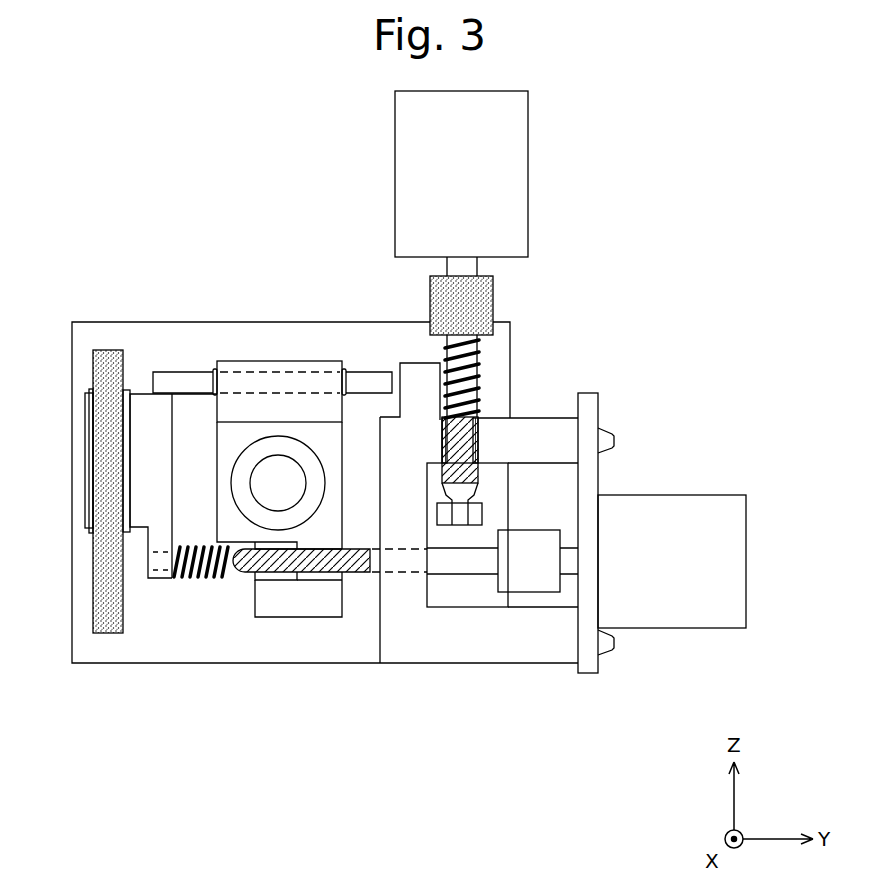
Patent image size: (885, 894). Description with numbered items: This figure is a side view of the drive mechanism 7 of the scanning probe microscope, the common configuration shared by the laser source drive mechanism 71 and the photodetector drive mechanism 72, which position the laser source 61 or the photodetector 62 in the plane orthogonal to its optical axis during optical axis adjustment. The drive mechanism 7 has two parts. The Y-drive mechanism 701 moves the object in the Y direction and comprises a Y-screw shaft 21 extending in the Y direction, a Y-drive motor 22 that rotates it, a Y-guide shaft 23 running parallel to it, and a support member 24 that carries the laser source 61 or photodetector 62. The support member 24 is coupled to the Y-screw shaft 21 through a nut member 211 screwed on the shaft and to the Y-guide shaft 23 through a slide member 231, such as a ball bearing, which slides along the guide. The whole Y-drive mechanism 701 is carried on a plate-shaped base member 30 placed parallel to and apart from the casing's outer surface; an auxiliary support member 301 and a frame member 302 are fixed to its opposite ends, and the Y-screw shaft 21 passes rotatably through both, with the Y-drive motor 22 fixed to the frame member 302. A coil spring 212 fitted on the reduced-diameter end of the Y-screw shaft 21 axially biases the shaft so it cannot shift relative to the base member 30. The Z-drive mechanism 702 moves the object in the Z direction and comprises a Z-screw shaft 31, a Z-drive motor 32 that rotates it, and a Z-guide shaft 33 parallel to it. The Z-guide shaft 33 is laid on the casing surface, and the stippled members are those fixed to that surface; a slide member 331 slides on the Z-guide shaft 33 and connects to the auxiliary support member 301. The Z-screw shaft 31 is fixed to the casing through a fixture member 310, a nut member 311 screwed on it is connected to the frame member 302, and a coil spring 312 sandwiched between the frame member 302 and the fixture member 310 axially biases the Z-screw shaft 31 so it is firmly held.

The drive mechanism 7 is at (107, 745).
The laser source drive mechanism 71 is at (95, 457).
The photodetector drive mechanism 72 is at (449, 400).
The Y-drive mechanism 701 is at (190, 645).
The Z-drive mechanism 702 is at (103, 222).
The base member 30 is at (88, 320).
The auxiliary support member 301 is at (136, 392).
The frame member 302 is at (498, 665).
The Z-guide shaft 33 is at (93, 578).
The slide member 331 is at (85, 431).
The Y-guide shaft 23 is at (176, 372).
The slide member 231 is at (344, 367).
The support member 24 is at (216, 455).
The photodetector 62 is at (280, 468).
The laser source 61 is at (278, 483).
The Y-screw shaft 21 is at (245, 575).
The nut member 211 is at (312, 581).
The coil spring 212 is at (192, 578).
The Y-drive motor 22 is at (676, 493).
The Z-drive motor 32 is at (395, 153).
The fixture member 310 is at (493, 293).
The coil spring 312 is at (480, 360).
The nut member 311 is at (478, 446).
The Z-screw shaft 31 is at (477, 472).